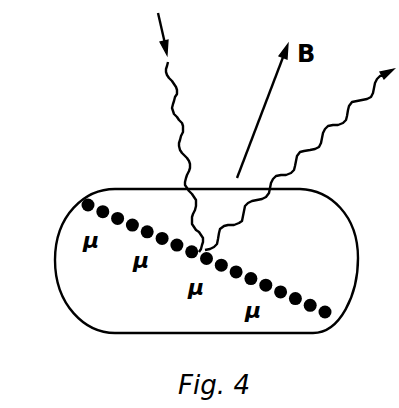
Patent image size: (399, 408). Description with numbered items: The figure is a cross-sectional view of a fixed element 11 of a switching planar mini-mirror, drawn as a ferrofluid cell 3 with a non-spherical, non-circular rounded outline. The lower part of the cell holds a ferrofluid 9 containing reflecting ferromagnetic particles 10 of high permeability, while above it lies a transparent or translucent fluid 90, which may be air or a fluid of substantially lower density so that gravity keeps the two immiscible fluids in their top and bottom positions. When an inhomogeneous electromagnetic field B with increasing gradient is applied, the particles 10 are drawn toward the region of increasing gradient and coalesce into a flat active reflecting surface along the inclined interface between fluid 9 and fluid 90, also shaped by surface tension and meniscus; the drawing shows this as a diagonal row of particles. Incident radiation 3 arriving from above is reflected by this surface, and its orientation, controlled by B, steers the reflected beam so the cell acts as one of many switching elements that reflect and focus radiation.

The ferrofluid cell 3 is at (166, 85).
The ferrofluid 9 is at (126, 308).
The reflecting ferromagnetic particles 10 is at (158, 228).
The fixed element 11 is at (46, 323).
The top transparent or translucent fluid 90 is at (325, 220).